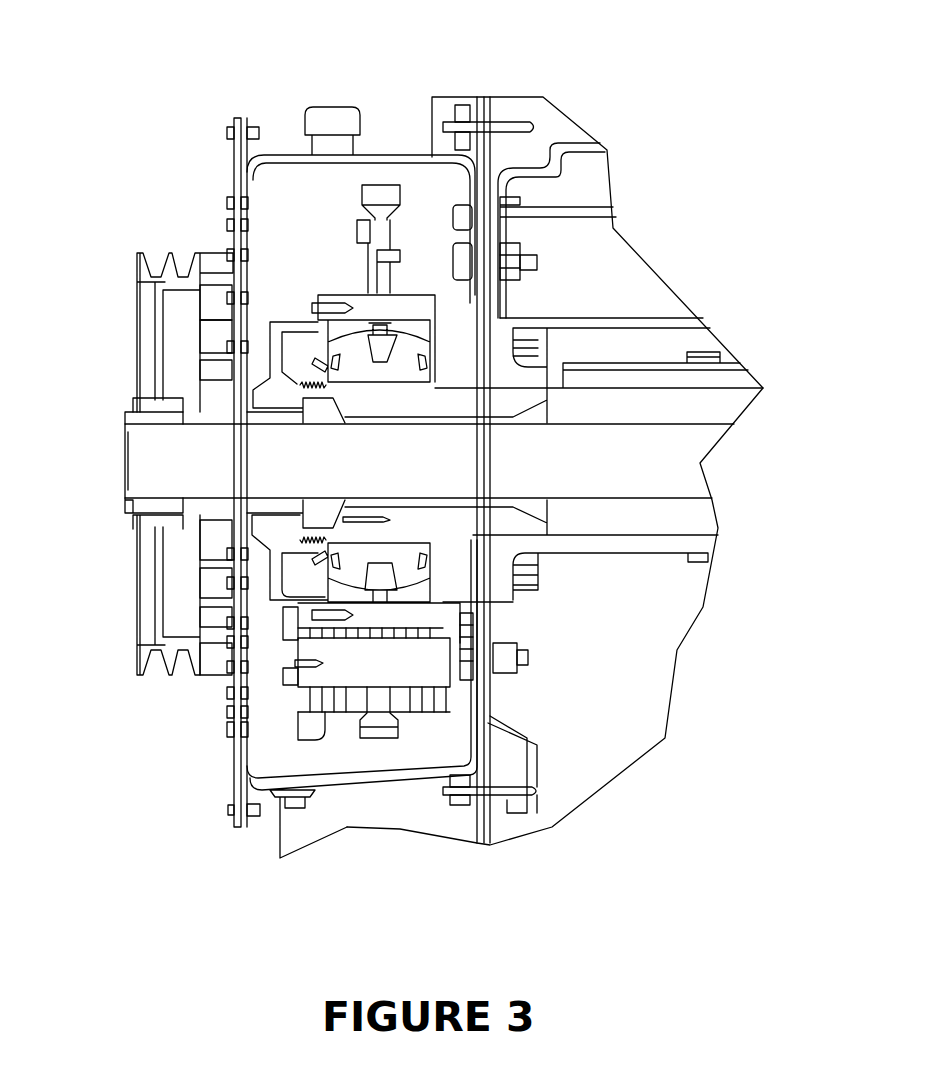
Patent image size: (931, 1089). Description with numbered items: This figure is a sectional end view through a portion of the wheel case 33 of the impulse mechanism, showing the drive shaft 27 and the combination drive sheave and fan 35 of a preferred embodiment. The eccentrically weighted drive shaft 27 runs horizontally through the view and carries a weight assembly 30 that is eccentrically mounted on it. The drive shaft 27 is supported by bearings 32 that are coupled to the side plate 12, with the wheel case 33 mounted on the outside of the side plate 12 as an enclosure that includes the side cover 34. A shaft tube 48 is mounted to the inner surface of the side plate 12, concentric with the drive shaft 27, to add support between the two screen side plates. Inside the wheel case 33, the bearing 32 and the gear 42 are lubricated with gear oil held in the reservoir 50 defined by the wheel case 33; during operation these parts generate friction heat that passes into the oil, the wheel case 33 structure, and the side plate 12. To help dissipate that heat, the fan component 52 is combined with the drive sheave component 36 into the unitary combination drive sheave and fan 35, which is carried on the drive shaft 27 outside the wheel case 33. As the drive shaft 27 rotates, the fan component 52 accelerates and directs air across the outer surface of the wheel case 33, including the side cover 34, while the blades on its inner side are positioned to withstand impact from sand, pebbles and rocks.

The side plate 12 is at (485, 703).
The drive shaft 27 is at (160, 462).
The weight assembly 30 is at (412, 703).
The bearing 32 is at (403, 360).
The wheel case 33 is at (377, 80).
The side cover 34 is at (230, 182).
The combination drive sheave and fan 35 is at (98, 674).
The drive sheave component 36 is at (127, 573).
The gear 42 is at (378, 183).
The shaft tube 48 is at (633, 380).
The reservoir 50 is at (345, 758).
The fan component 52 is at (212, 690).